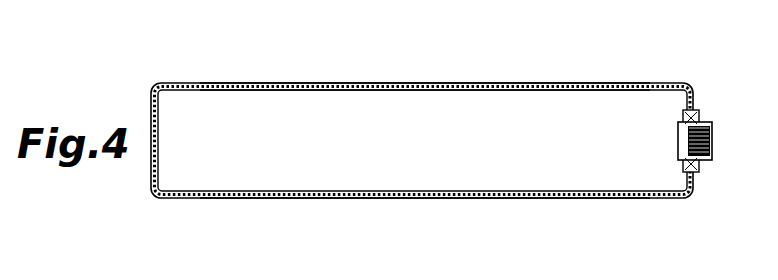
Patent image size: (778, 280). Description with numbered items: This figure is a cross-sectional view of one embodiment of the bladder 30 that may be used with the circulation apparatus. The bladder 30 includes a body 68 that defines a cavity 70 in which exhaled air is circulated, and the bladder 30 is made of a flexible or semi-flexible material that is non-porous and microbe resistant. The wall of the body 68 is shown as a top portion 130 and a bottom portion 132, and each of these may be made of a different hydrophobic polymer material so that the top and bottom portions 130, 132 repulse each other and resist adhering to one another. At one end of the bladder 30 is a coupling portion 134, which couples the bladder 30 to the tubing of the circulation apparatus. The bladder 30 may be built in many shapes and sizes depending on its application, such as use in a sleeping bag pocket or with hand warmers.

The bladder 30 is at (690, 78).
The body 68 is at (210, 83).
The cavity 70 is at (284, 91).
The top portion 130 is at (420, 83).
The bottom portion 132 is at (525, 199).
The coupling portion 134 is at (678, 140).